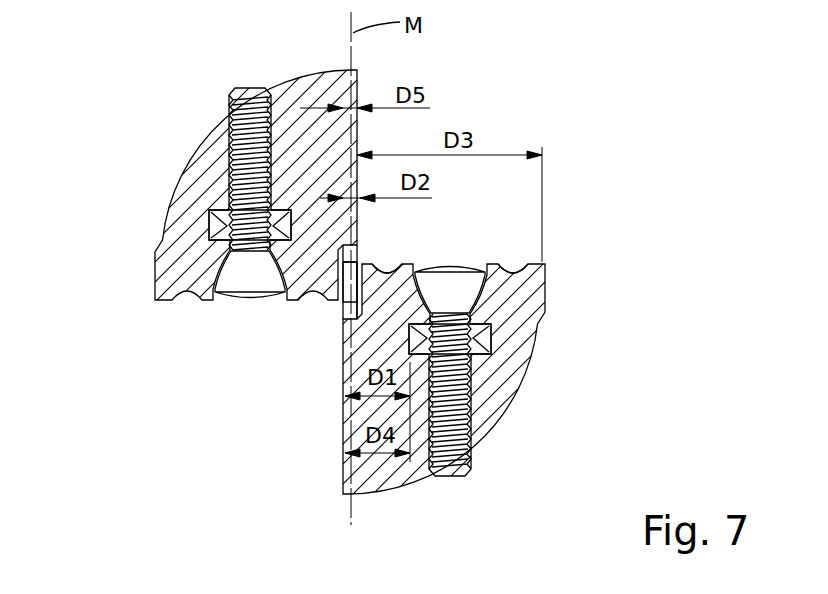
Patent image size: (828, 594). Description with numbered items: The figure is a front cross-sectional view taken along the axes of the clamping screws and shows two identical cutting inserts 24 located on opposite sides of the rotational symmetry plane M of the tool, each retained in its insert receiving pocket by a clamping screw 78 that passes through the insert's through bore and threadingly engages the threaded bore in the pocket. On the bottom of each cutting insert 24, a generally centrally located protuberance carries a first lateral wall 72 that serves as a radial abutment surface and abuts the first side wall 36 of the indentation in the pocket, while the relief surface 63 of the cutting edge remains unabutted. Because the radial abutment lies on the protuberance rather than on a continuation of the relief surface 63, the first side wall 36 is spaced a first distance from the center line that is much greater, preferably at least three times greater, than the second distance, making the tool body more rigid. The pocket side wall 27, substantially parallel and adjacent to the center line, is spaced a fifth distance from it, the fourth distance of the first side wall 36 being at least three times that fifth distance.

The cutting insert 24 is at (173, 275).
The pocket side wall 27 is at (376, 272).
The first side wall 36 is at (436, 350).
The relief surface 63 is at (345, 307).
The first lateral wall 72 is at (375, 343).
The clamping screw 78 is at (252, 282).